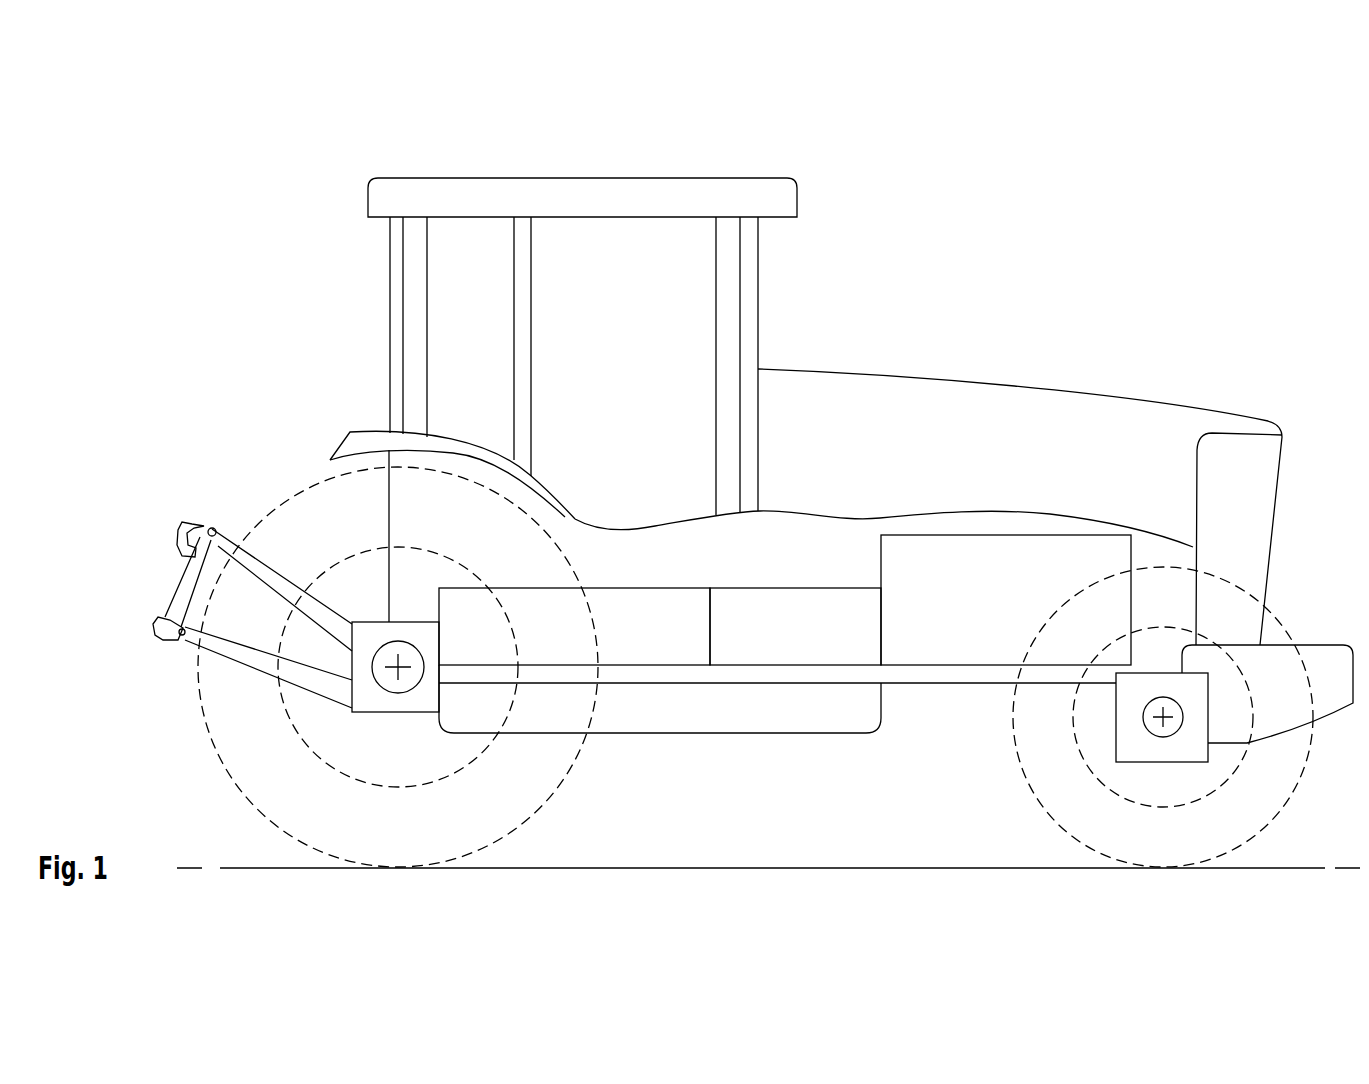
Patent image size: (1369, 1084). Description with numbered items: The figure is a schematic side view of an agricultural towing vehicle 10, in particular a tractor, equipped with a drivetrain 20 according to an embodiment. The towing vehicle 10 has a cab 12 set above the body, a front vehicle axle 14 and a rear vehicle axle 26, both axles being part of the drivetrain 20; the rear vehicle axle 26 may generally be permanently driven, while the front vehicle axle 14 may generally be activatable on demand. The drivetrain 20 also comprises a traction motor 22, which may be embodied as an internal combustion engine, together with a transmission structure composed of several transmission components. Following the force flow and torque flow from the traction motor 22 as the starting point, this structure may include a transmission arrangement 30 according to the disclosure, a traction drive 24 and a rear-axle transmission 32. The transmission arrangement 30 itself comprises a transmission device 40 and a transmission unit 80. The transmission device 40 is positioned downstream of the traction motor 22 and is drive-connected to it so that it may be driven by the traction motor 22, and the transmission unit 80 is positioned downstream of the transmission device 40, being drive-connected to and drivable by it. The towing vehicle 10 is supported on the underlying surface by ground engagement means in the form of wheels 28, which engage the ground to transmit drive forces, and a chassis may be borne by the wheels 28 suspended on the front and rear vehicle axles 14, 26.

The agricultural towing vehicle 10 is at (1049, 175).
The cab 12 is at (668, 208).
The front vehicle axle 14 is at (1170, 723).
The drivetrain 20 is at (788, 475).
The traction motor 22 is at (1021, 611).
The traction drive 24 is at (387, 700).
The rear vehicle axle 26 is at (386, 660).
The wheels 28 is at (508, 796).
The transmission arrangement 30 is at (672, 736).
The rear-axle transmission 32 is at (413, 633).
The transmission device 40 is at (810, 638).
The transmission unit 80 is at (637, 638).